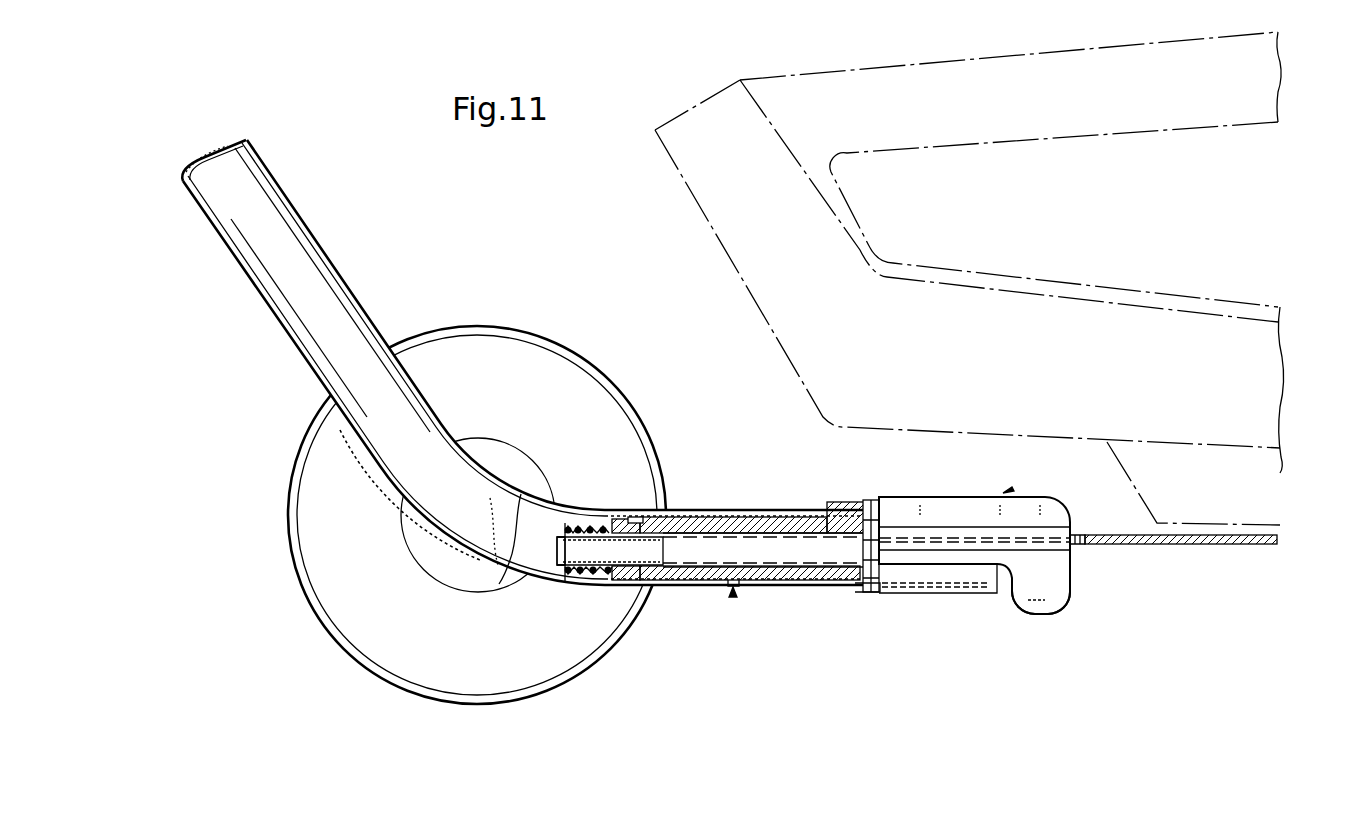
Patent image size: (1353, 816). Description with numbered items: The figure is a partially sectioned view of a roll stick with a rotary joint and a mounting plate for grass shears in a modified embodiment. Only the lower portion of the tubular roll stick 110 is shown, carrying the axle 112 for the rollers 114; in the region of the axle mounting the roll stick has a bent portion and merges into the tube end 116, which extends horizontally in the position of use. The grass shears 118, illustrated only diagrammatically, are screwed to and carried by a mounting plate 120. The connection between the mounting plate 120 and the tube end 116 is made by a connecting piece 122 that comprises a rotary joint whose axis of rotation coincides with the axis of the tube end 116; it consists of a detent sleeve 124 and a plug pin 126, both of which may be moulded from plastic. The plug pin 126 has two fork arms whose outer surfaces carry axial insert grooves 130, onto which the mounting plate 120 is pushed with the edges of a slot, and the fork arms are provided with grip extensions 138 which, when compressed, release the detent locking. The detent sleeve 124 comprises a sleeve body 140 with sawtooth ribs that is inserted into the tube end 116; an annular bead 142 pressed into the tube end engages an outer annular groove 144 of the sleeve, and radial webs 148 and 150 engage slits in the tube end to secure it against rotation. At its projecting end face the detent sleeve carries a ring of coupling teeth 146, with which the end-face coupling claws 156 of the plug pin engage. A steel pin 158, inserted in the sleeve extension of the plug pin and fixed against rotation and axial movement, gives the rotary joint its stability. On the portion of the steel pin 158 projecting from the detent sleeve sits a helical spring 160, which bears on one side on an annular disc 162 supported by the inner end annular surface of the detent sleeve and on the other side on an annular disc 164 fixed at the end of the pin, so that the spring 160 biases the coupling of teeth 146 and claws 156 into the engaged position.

The tubular roll stick 110 is at (277, 210).
The axle 112 is at (467, 518).
The rollers 114 is at (320, 470).
The tube end 116 is at (692, 512).
The grass shears 118 is at (1012, 284).
The mounting plate 120 is at (1170, 546).
The connecting piece 122 is at (1002, 494).
The detent sleeve 124 is at (733, 596).
The plug pin 126 is at (933, 577).
The axial insert grooves 130 is at (940, 542).
The grip extensions 138 is at (1040, 598).
The sleeve body 140 is at (743, 512).
The annular bead 142 is at (637, 512).
The outer annular groove 144 is at (637, 588).
The coupling teeth 146 is at (835, 583).
The radial web 148 is at (838, 502).
The radial web 150 is at (861, 592).
The coupling claws 156 is at (886, 503).
The steel pin 158 is at (648, 547).
The helical spring 160 is at (568, 587).
The annular disc 162 is at (605, 585).
The annular disc 164 is at (567, 523).